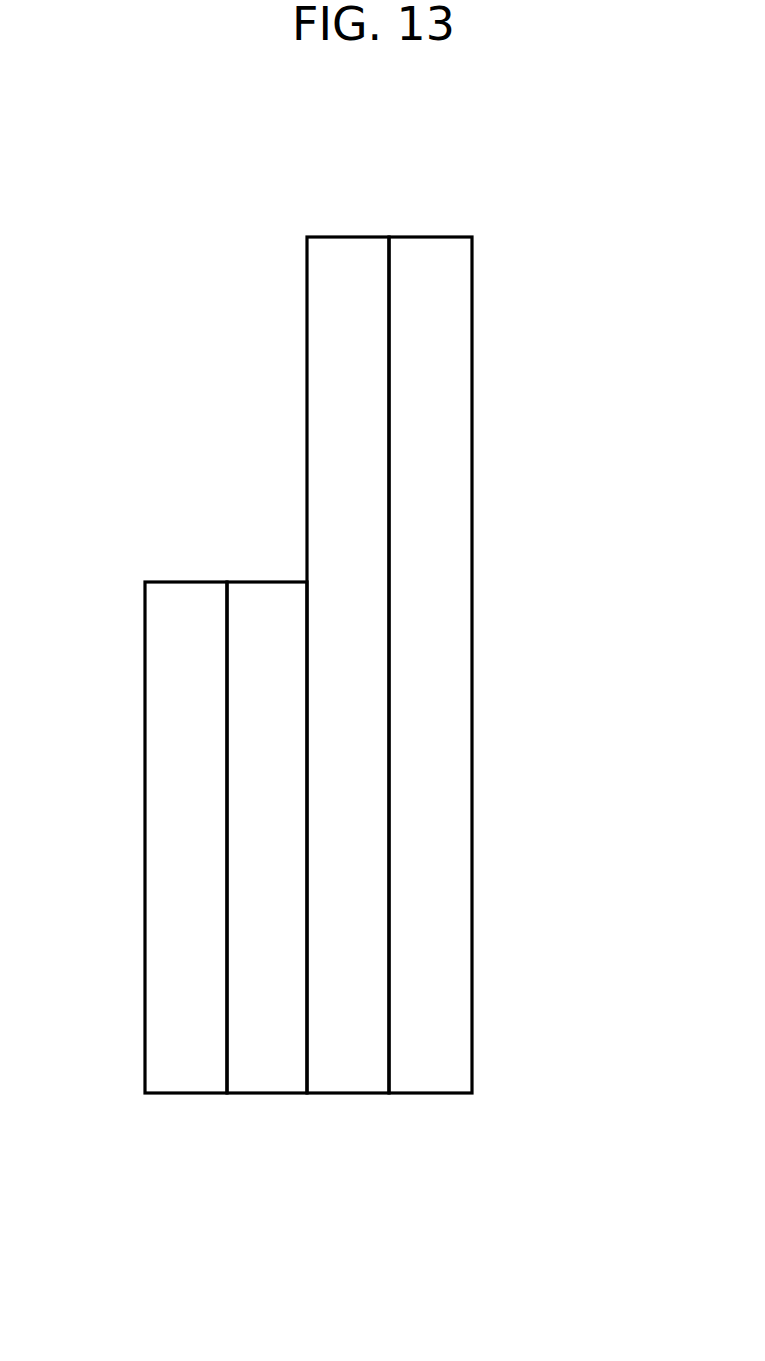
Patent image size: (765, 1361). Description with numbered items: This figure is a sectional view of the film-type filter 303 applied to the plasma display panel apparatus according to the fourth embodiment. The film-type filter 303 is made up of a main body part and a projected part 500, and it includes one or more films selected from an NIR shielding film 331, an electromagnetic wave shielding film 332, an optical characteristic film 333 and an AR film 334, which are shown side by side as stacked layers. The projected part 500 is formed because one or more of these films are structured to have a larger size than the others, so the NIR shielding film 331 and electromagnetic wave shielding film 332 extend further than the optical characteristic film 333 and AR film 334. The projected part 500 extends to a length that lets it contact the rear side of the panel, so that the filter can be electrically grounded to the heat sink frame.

The projected part 500 is at (356, 791).
The film-type filter 303 is at (300, 794).
The NIR shielding film 331 is at (453, 724).
The electromagnetic wave shielding film 332 is at (335, 1078).
The optical characteristic film 333 is at (249, 1083).
The AR film 334 is at (172, 1083).